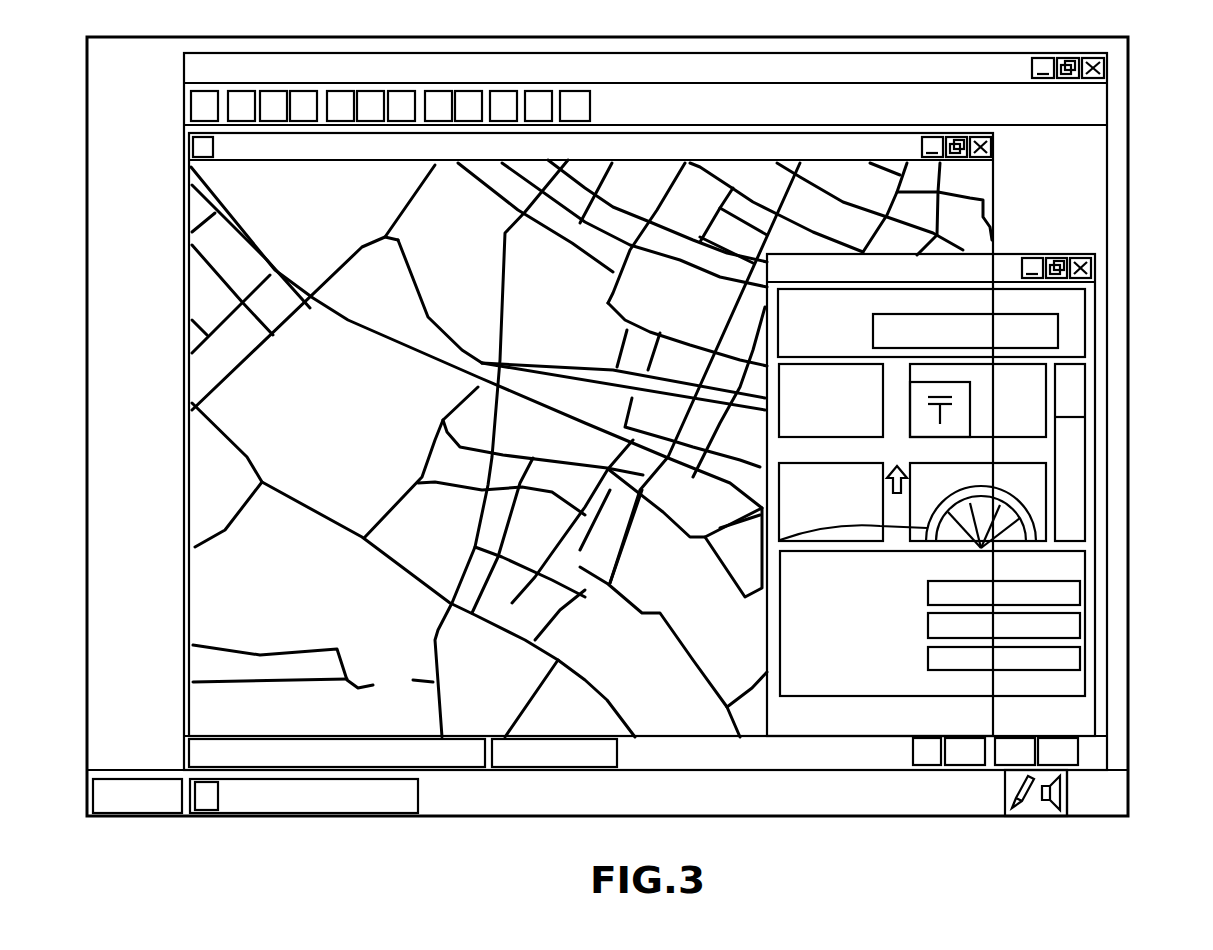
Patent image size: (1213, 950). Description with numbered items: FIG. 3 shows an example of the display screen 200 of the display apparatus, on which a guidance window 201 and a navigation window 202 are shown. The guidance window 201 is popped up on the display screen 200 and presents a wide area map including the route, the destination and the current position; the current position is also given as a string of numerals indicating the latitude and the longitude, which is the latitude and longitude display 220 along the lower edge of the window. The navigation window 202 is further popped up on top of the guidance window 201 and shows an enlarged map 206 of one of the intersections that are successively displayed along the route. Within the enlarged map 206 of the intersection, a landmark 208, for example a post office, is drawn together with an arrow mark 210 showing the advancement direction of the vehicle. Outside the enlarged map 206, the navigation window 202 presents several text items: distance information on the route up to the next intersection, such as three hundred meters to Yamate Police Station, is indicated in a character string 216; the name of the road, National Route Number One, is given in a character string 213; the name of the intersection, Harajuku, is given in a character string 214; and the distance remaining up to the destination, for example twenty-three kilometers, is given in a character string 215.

The display screen 200 is at (1143, 119).
The guidance window 201 is at (975, 183).
The navigation window 202 is at (990, 488).
The enlarged map 206 is at (991, 437).
The landmark 208 is at (960, 388).
The arrow mark 210 is at (907, 481).
The character string 213 is at (1078, 590).
The character string 214 is at (1078, 623).
The character string 215 is at (1070, 657).
The character string 216 is at (1052, 330).
The latitude/longitude display 220 is at (452, 768).